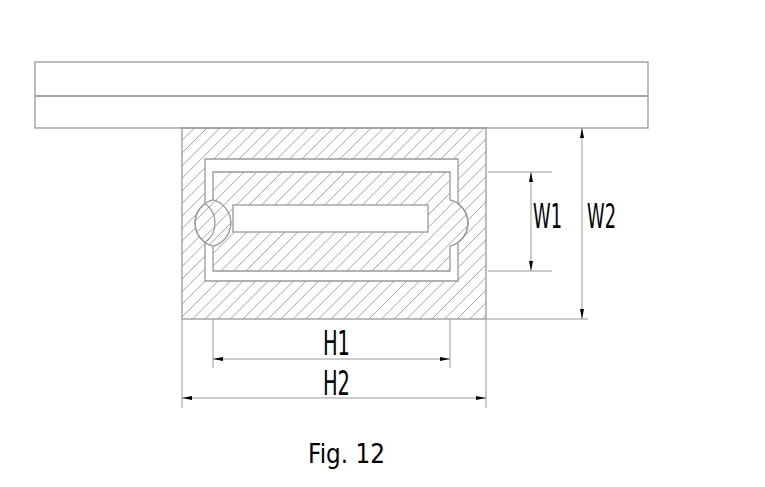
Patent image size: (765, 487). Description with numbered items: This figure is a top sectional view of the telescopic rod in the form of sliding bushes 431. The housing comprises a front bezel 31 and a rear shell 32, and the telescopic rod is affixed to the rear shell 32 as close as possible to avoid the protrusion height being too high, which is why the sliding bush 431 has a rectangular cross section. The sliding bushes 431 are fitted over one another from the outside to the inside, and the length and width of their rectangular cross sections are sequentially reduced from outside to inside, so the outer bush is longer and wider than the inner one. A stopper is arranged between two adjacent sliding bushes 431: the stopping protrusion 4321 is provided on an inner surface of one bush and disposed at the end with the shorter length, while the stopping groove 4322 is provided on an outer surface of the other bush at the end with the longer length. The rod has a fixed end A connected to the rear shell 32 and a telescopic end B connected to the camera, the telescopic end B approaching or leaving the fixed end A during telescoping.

The front bezel 31 is at (500, 80).
The rear shell 32 is at (548, 117).
The sliding bush 431 is at (200, 145).
The stopping protrusion 4321 is at (460, 207).
The stopping groove 4322 is at (462, 203).
The fixed end A is at (190, 203).
The telescopic end B is at (212, 243).